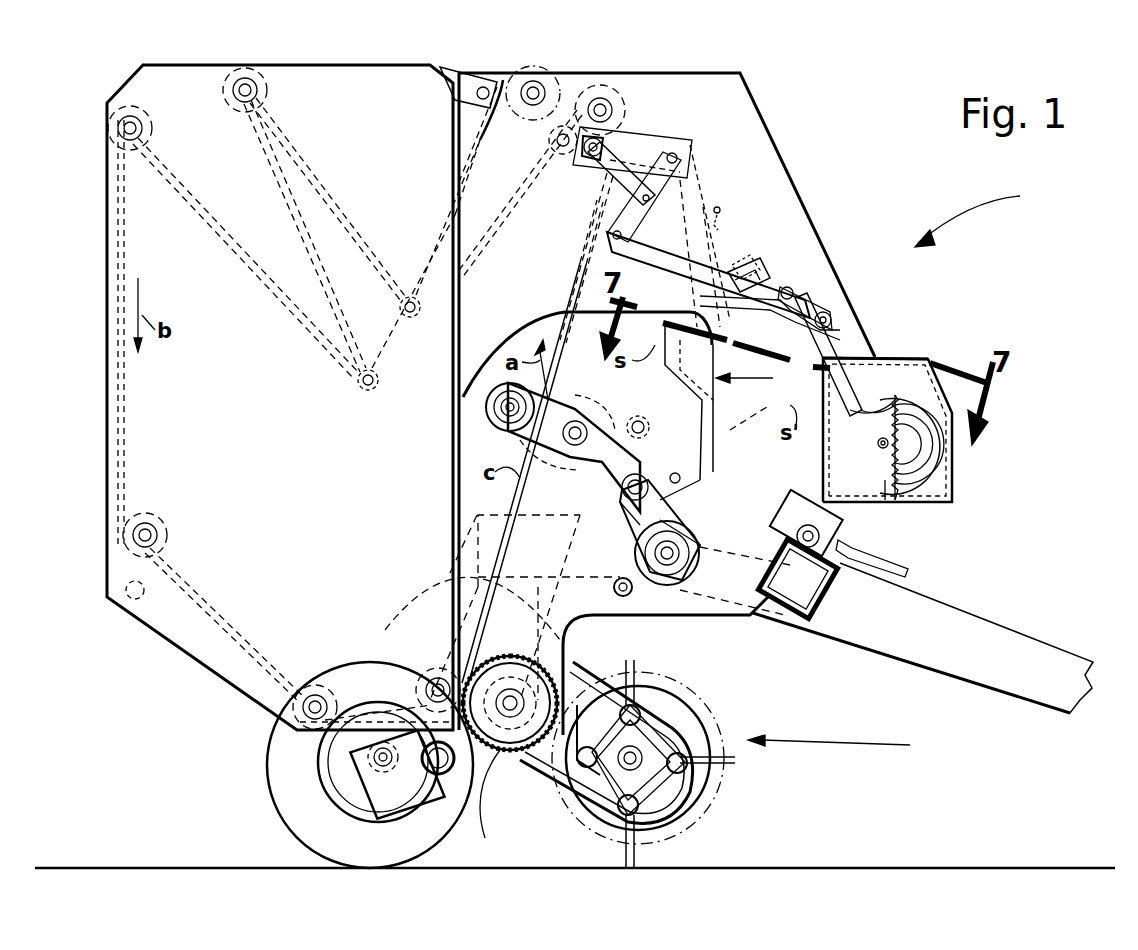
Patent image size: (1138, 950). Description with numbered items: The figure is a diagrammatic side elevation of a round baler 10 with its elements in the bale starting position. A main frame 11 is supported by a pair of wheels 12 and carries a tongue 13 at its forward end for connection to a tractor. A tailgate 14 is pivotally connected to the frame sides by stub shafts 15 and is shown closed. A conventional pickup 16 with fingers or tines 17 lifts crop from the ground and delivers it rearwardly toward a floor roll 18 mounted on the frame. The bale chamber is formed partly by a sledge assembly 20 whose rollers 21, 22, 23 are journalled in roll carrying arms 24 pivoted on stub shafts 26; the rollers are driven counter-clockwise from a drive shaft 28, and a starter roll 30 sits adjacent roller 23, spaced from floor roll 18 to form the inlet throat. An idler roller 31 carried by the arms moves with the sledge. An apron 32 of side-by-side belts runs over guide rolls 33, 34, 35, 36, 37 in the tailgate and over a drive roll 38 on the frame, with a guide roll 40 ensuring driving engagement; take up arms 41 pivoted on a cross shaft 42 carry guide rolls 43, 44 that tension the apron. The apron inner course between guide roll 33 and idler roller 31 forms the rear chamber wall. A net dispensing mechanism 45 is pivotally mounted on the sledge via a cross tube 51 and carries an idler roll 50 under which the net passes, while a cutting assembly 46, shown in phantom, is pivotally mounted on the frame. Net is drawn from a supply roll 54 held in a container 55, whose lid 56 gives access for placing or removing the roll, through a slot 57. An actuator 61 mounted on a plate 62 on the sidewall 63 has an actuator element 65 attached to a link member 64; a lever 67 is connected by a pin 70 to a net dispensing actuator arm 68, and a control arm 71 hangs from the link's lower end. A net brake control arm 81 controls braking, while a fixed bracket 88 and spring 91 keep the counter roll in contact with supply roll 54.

The round baler 10 is at (986, 214).
The main frame 11 is at (570, 620).
The wheels 12 is at (265, 790).
The tongue 13 is at (926, 626).
The tailgate 14 is at (360, 70).
The stub shafts 15 is at (470, 94).
The pickup 16 is at (832, 754).
The fingers or tines 17 is at (720, 800).
The floor roll 18 is at (498, 820).
The sledge assembly 20 is at (500, 445).
The roller 21 is at (565, 460).
The roller 22 is at (607, 500).
The roller 23 is at (635, 545).
The roll carrying arm 24 is at (680, 510).
The stub shaft 26 is at (695, 570).
The drive shaft 28 is at (895, 565).
The starter roll 30 is at (640, 600).
The idler roller 31 is at (490, 395).
The apron 32 is at (107, 352).
The guide roll 33 is at (433, 672).
The guide roll 34 is at (312, 690).
The guide roll 35 is at (140, 522).
The guide roll 36 is at (152, 140).
The guide roll 37 is at (232, 102).
The drive roll 38 is at (603, 92).
The guide roll 40 is at (563, 125).
The take up arms 41 is at (440, 225).
The cross shaft 42 is at (520, 80).
The guide roll 43 is at (372, 392).
The guide roll 44 is at (408, 295).
The net dispensing mechanism 45 is at (753, 378).
The cutting assembly 46 is at (780, 262).
The idler roll 50 is at (695, 455).
The cross tube 51 is at (638, 420).
The supply roll 54 is at (940, 462).
The container 55 is at (955, 490).
The cover 56 is at (935, 358).
The slot 57 is at (800, 380).
The actuator 61 is at (604, 140).
The plate 62 is at (650, 128).
The sidewall 63 is at (745, 165).
The link member 64 is at (643, 190).
The actuator element 65 is at (622, 200).
The lever 67 is at (775, 153).
The net dispensing actuator arm 68 is at (730, 245).
The pin 70 is at (722, 208).
The control arm 71 is at (630, 250).
The net brake control arm 81 is at (855, 335).
The fixed bracket 88 is at (886, 480).
The spring 91 is at (885, 500).